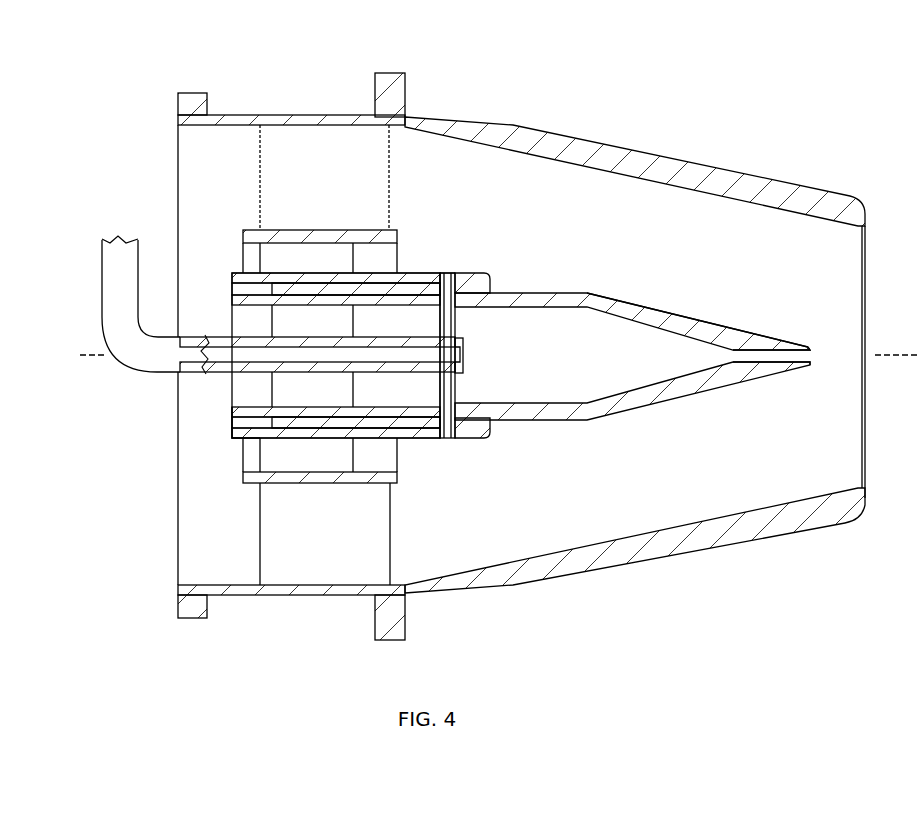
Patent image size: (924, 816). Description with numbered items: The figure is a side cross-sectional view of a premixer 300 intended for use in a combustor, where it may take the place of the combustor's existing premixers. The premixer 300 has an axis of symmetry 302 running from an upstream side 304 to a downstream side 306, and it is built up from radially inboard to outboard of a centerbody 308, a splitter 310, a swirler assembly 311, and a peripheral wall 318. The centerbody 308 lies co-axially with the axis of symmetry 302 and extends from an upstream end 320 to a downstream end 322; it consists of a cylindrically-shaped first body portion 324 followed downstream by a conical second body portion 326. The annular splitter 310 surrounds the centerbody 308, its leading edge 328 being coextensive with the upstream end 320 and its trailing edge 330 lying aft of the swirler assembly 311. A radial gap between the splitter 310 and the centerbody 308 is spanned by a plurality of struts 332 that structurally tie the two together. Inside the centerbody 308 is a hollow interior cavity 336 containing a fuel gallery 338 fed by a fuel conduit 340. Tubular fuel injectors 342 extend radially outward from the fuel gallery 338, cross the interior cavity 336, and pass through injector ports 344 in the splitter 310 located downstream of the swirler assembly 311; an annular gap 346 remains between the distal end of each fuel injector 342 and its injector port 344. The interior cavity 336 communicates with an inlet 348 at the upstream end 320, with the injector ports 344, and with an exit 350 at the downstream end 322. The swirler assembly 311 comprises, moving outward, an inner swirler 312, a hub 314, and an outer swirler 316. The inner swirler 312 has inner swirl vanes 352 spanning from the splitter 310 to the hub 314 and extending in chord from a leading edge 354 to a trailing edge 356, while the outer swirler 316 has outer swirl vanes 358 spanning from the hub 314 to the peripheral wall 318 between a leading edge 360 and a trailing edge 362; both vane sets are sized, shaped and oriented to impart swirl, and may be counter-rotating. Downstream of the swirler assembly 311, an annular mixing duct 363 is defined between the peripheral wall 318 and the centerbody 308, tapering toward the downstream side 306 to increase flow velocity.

The premixer 300 is at (517, 356).
The axis of symmetry 302 is at (897, 353).
The upstream side 304 is at (152, 568).
The downstream side 306 is at (879, 456).
The centerbody 308 is at (591, 440).
The splitter 310 is at (405, 436).
The swirler assembly 311 is at (204, 431).
The inner swirler 312 is at (277, 258).
The hub 314 is at (387, 232).
The outer swirler 316 is at (279, 172).
The peripheral wall 318 is at (735, 176).
The upstream end 320 is at (232, 414).
The downstream end 322 is at (812, 366).
The first body portion 324 is at (537, 300).
The second body portion 326 is at (699, 325).
The leading edge 328 is at (252, 440).
The trailing edge 330 is at (492, 438).
The struts 332 is at (423, 290).
The interior cavity 336 is at (618, 353).
The fuel gallery 338 is at (464, 355).
The fuel conduit 340 is at (125, 242).
The fuel injectors 342 is at (456, 318).
The injector ports 344 is at (496, 283).
The annular gap 346 is at (457, 263).
The inlet 348 is at (232, 323).
The exit 350 is at (812, 357).
The inner swirl vanes 352 is at (303, 456).
The leading edge 354 is at (258, 462).
The trailing edge 356 is at (355, 463).
The outer swirl vanes 358 is at (323, 532).
The leading edge 360 is at (260, 573).
The trailing edge 362 is at (392, 573).
The mixing duct 363 is at (657, 242).